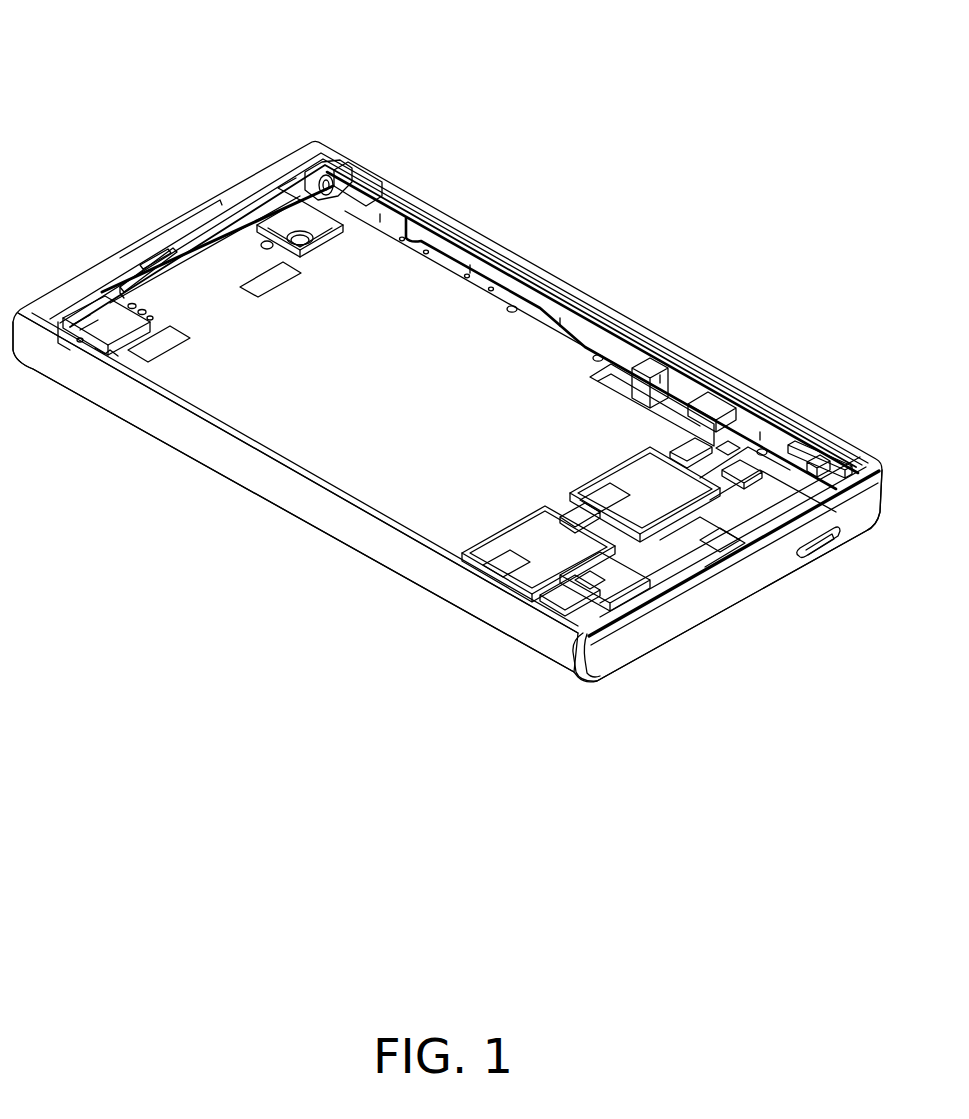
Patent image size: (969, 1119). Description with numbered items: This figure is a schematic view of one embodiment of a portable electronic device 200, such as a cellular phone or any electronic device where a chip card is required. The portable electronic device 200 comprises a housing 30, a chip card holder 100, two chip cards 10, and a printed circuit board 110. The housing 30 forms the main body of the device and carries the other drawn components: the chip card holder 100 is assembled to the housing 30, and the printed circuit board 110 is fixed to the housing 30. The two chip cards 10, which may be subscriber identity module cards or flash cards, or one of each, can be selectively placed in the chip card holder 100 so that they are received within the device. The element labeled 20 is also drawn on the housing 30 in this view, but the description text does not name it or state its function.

The portable electronic device 200 is at (183, 44).
The chip cards 10 is at (523, 537).
The end cap 20 is at (650, 633).
The housing 30 is at (470, 590).
The chip card holder 100 is at (680, 530).
The printed circuit board 110 is at (535, 365).